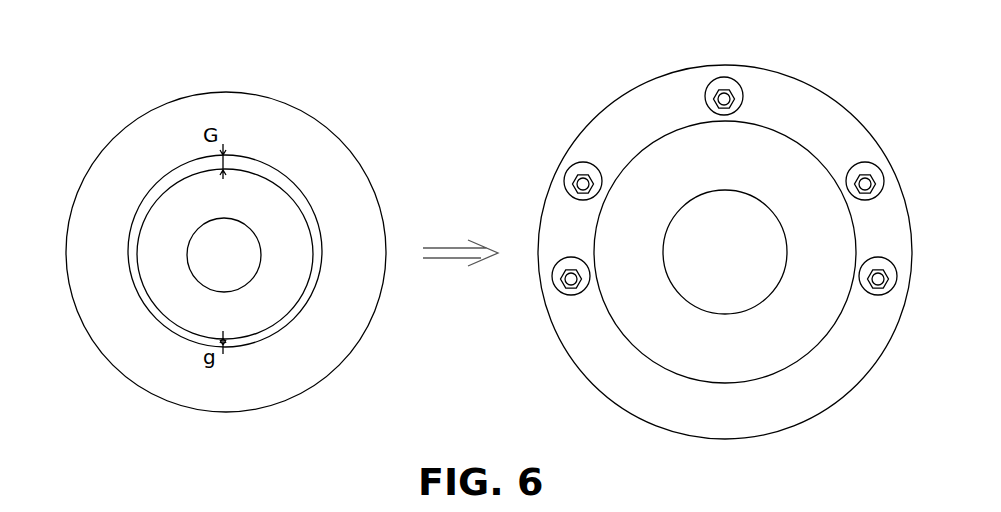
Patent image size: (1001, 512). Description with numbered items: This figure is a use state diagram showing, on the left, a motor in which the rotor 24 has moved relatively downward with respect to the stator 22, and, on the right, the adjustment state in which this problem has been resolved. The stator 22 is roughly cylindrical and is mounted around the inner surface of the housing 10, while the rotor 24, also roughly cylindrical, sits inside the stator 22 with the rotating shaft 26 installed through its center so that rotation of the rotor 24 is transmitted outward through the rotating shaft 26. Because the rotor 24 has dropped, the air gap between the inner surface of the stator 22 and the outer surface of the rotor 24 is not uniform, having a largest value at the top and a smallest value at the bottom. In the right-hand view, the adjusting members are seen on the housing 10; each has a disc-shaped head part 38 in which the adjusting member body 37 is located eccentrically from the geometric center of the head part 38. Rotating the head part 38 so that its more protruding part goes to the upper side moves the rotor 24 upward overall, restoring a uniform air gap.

The housing 10 is at (650, 105).
The stator 22 is at (87, 310).
The rotor 24 is at (162, 258).
The rotating shaft 26 is at (208, 243).
The adjusting member body 37 is at (721, 92).
The head part 38 is at (739, 81).